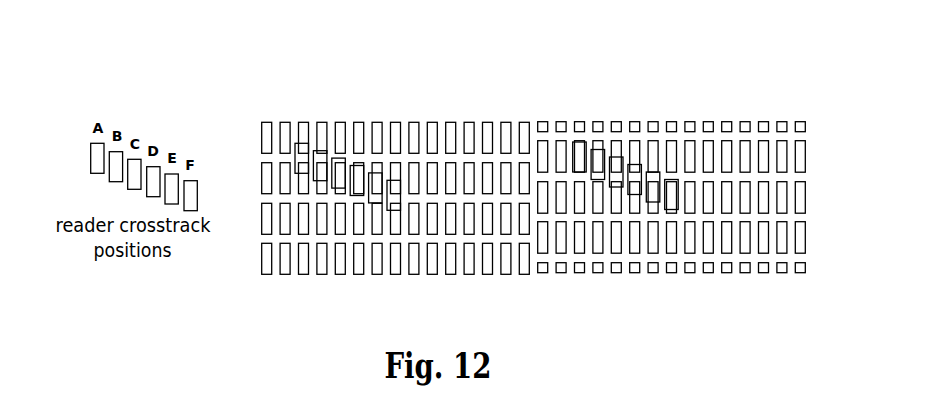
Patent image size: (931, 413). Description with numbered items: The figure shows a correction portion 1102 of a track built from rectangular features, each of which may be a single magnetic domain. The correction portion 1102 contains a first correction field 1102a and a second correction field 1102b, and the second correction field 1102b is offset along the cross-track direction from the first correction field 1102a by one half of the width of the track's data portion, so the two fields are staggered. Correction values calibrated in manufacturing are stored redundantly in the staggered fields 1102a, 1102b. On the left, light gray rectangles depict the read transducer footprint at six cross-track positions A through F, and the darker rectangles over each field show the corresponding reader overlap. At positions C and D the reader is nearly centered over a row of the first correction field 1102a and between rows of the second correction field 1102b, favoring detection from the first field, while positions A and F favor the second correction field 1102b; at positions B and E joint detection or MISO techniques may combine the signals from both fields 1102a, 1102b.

The correction portion 1102 is at (256, 65).
The first correction field 1102a is at (535, 113).
The second correction field 1102b is at (535, 113).